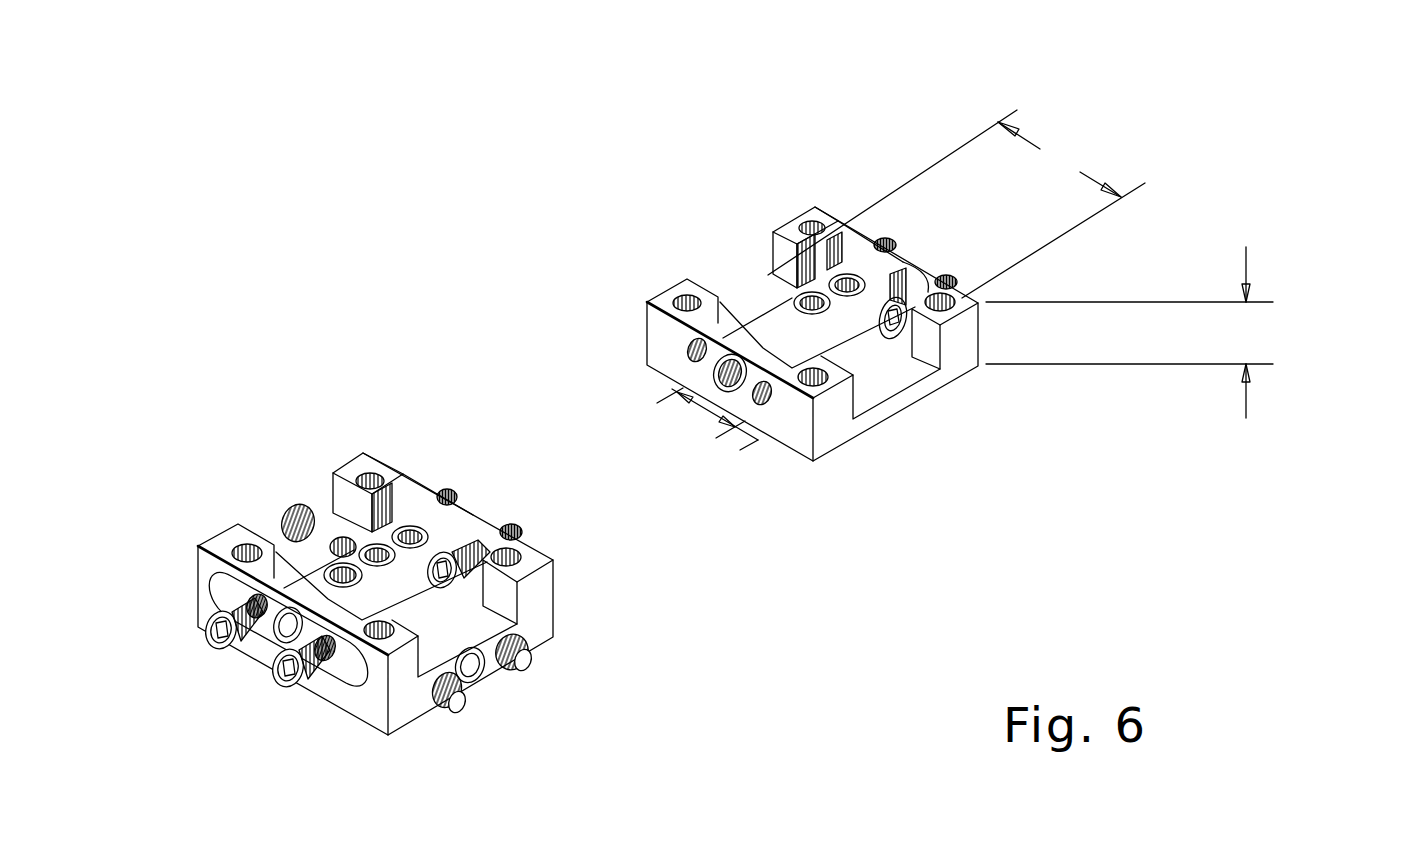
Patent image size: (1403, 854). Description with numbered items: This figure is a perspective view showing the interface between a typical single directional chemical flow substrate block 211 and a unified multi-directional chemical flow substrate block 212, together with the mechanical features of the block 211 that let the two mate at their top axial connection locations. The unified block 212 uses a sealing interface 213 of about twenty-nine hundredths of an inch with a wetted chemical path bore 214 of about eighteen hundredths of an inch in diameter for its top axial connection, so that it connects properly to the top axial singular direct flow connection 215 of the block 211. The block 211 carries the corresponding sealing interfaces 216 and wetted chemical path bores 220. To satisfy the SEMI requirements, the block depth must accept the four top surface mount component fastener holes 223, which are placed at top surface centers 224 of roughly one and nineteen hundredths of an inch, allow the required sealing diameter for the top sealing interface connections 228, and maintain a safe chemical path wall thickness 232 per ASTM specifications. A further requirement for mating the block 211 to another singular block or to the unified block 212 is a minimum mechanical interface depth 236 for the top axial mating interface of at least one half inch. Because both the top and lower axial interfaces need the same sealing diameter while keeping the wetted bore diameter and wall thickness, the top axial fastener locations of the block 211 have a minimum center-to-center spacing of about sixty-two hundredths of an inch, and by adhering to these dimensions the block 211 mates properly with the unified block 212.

The single directional chemical flow substrate block 211 is at (540, 204).
The unified multi-directional chemical flow substrate block 212 is at (232, 457).
The sealing interface 213 is at (683, 421).
The wetted chemical path bore 214 is at (297, 680).
The top axial singular (direct flow) connection 215 is at (630, 323).
The sealing interface 216 is at (698, 378).
The wetted chemical path bore 220 is at (758, 403).
The top surface mount component fastener holes 223 is at (931, 273).
The top surface centers 224 is at (1128, 121).
The top sealing interface connections 228 is at (771, 284).
The chemical path wall thickness 232 is at (486, 695).
The minimum mechanical interface depth 236 is at (1338, 386).